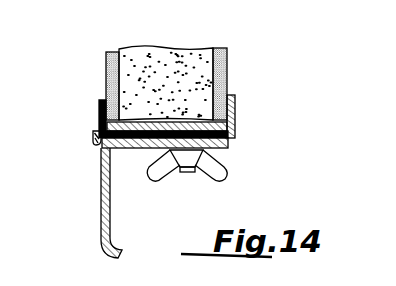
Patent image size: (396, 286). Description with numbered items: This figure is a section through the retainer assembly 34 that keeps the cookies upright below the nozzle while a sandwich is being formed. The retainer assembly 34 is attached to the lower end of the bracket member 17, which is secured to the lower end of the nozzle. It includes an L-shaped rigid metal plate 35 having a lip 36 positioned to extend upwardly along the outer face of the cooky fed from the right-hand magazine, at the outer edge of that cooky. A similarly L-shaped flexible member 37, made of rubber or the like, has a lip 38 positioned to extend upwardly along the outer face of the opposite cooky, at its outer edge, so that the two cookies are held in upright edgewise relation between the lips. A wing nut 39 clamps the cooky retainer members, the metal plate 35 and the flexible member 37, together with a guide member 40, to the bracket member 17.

The bracket member 17 is at (197, 121).
The retainer assembly 34 is at (239, 113).
The L-shaped rigid metal plate 35 is at (233, 140).
The lip 36 is at (235, 121).
The L-shaped flexible member 37 is at (100, 143).
The lip 38 is at (99, 111).
The wing nut 39 is at (220, 168).
The guide member 40 is at (119, 150).